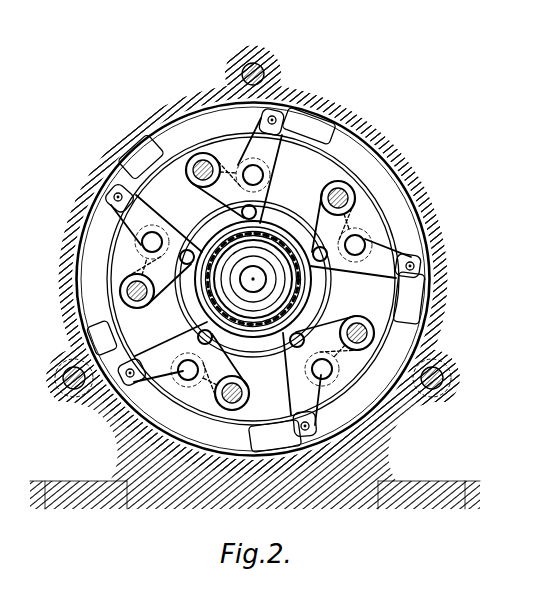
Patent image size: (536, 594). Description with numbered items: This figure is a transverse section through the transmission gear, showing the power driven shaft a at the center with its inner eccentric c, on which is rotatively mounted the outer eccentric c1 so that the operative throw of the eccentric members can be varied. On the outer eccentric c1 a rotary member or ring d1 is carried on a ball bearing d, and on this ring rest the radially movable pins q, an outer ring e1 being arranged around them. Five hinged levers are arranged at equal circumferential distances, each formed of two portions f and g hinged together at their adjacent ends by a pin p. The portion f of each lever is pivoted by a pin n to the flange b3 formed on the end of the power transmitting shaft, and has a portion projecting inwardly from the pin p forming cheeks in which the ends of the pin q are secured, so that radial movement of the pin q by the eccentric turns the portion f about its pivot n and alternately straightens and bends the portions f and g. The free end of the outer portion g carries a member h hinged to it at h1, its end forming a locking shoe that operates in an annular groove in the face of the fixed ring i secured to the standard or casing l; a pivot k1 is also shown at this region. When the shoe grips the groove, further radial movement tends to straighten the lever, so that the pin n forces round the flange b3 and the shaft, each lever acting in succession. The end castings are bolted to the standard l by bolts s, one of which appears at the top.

The power driven shaft a is at (253, 283).
The flange b3 is at (262, 405).
The eccentric c is at (266, 291).
The eccentric c1 is at (270, 286).
The ball bearing d is at (222, 292).
The rotary member or ring d1 is at (183, 340).
The hub flange e1 is at (203, 318).
The portion of operating lever f is at (218, 158).
The portion of operating lever g is at (252, 142).
The member h is at (140, 150).
The hinge h1 is at (267, 119).
The fixed ring i is at (395, 143).
The pivot pin k1 is at (114, 196).
The standard or casing l is at (173, 106).
The pin n is at (120, 299).
The pin p is at (142, 241).
The radially movable member or pin q is at (189, 249).
The bolt s is at (276, 60).